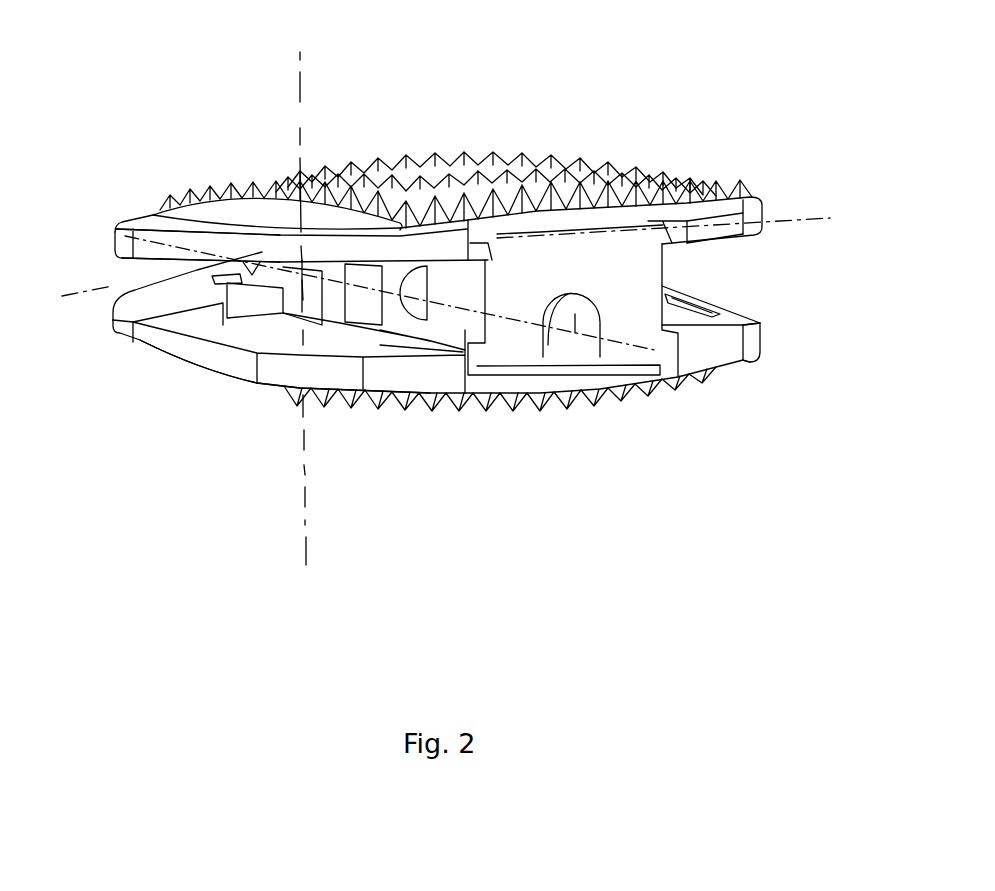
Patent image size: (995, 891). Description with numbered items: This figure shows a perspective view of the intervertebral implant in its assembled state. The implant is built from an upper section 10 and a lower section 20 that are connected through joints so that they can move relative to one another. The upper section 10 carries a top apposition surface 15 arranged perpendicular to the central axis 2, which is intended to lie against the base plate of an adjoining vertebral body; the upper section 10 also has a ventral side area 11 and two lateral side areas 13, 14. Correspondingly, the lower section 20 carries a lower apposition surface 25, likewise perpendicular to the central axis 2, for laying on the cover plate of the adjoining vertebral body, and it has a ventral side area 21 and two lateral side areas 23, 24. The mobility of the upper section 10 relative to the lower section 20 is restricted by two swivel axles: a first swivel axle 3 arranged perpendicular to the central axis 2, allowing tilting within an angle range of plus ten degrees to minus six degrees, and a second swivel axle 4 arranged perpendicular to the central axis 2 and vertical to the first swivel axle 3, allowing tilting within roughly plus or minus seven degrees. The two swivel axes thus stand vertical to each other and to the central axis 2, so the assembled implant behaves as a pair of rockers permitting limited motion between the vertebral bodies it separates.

The upper section 10 is at (176, 172).
The lateral side area 13 is at (212, 244).
The top apposition surface 15 is at (245, 228).
The lateral side area 14 is at (750, 192).
The ventral side area 11 is at (687, 223).
The first swivel axle 3 is at (461, 253).
The central axis 2 is at (303, 327).
The lower section 20 is at (131, 370).
The lateral side area 23 is at (205, 353).
The lower apposition surface 25 is at (280, 393).
The lateral side area 24 is at (736, 316).
The ventral side area 21 is at (745, 377).
The second swivel axle 4 is at (745, 378).